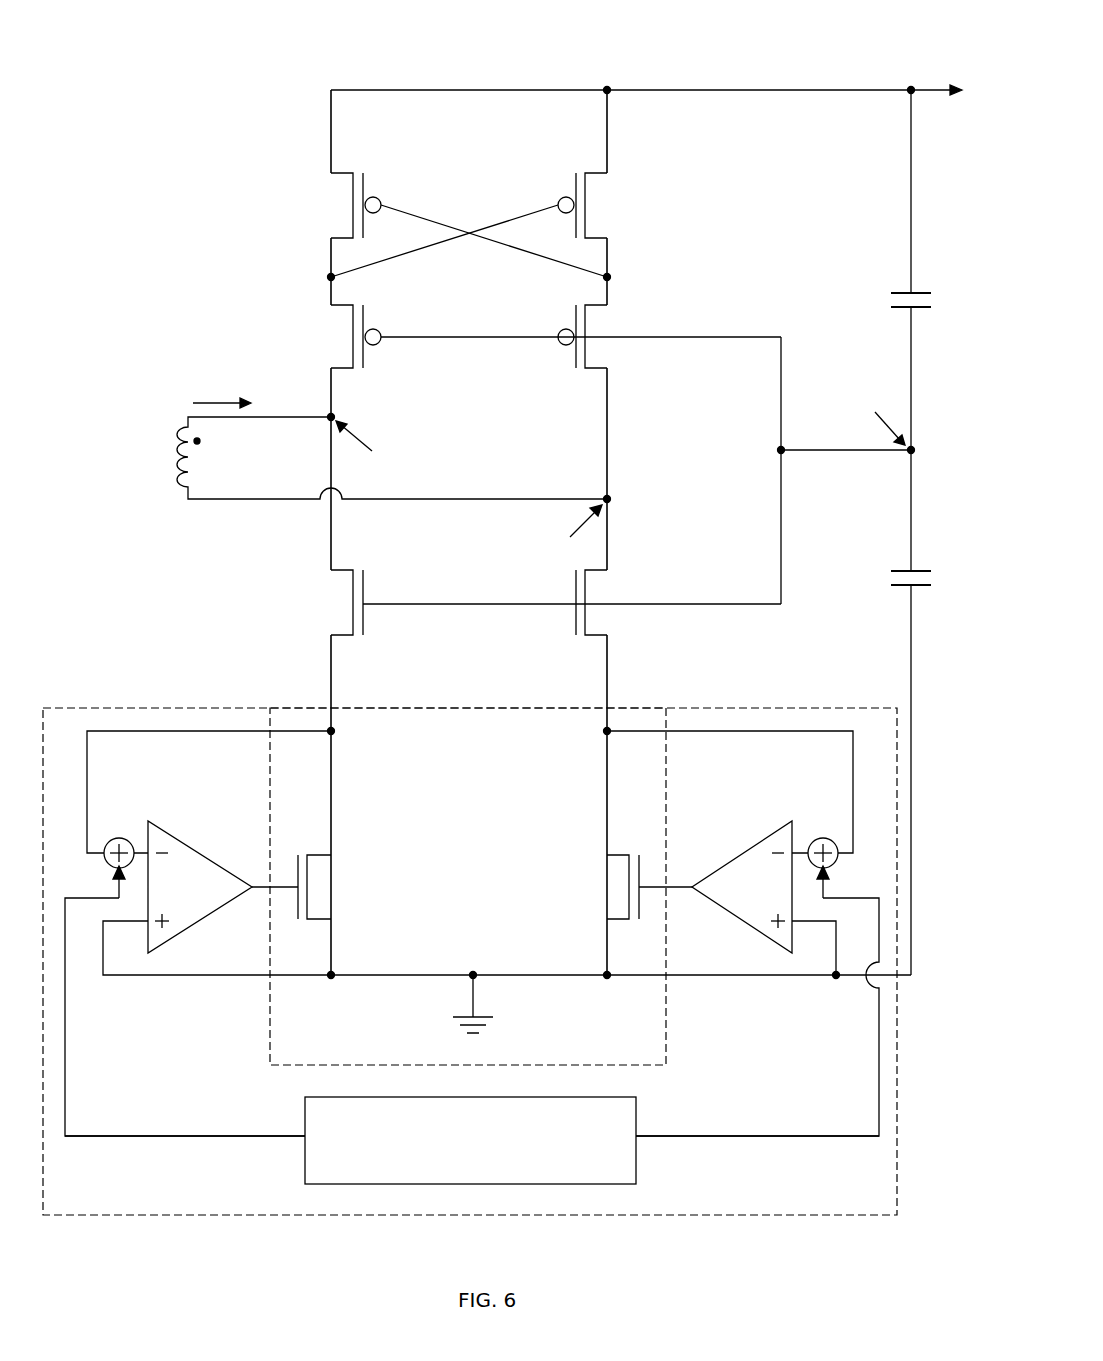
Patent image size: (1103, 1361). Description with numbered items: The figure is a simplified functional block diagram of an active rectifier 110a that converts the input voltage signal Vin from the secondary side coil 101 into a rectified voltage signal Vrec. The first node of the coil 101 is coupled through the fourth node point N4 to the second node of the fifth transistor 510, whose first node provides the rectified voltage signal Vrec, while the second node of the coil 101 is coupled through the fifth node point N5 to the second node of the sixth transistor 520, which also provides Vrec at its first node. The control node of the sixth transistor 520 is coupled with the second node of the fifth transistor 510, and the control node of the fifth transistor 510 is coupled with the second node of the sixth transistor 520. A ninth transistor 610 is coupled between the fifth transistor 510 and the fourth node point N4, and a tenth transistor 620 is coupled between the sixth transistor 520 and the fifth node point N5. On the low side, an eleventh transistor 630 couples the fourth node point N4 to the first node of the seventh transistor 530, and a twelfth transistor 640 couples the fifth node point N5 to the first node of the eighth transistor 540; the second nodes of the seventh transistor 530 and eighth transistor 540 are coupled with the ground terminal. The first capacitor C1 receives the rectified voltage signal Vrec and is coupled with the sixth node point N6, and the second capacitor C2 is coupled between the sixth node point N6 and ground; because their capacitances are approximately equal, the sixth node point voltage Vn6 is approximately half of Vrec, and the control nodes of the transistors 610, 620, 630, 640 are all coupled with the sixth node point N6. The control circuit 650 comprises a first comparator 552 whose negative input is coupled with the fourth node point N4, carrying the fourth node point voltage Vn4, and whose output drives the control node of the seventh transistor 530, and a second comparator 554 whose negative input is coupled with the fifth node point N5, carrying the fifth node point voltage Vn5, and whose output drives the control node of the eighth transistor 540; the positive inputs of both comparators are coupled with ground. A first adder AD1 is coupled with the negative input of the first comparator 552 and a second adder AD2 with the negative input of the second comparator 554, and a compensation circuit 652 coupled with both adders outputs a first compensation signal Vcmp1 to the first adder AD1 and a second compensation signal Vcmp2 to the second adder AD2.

The active rectifier 110a is at (208, 31).
The secondary side coil 101 is at (185, 484).
The fifth transistor 510 is at (342, 171).
The sixth transistor 520 is at (594, 171).
The seventh transistor 530 is at (312, 897).
The eighth transistor 540 is at (628, 897).
The first comparator 552 is at (216, 900).
The second comparator 554 is at (753, 900).
The ninth transistor 610 is at (352, 320).
The tenth transistor 620 is at (588, 318).
The eleventh transistor 630 is at (352, 588).
The twelfth transistor 640 is at (588, 586).
The control circuit 650 is at (165, 707).
The compensation circuit 652 is at (489, 1150).
The first capacitor C1 is at (903, 292).
The second capacitor C2 is at (903, 570).
The first adder AD1 is at (125, 838).
The second adder AD2 is at (822, 838).
The fourth node point N4 is at (349, 404).
The fifth node point N5 is at (624, 487).
The sixth node point N6 is at (928, 437).
The input voltage signal Vin is at (222, 390).
The fourth node point voltage Vn4 is at (367, 448).
The fifth node point voltage Vn5 is at (573, 531).
The sixth node point voltage Vn6 is at (876, 416).
The rectified voltage signal Vrec is at (925, 171).
The first compensation signal Vcmp1 is at (185, 1119).
The second compensation signal Vcmp2 is at (757, 1119).